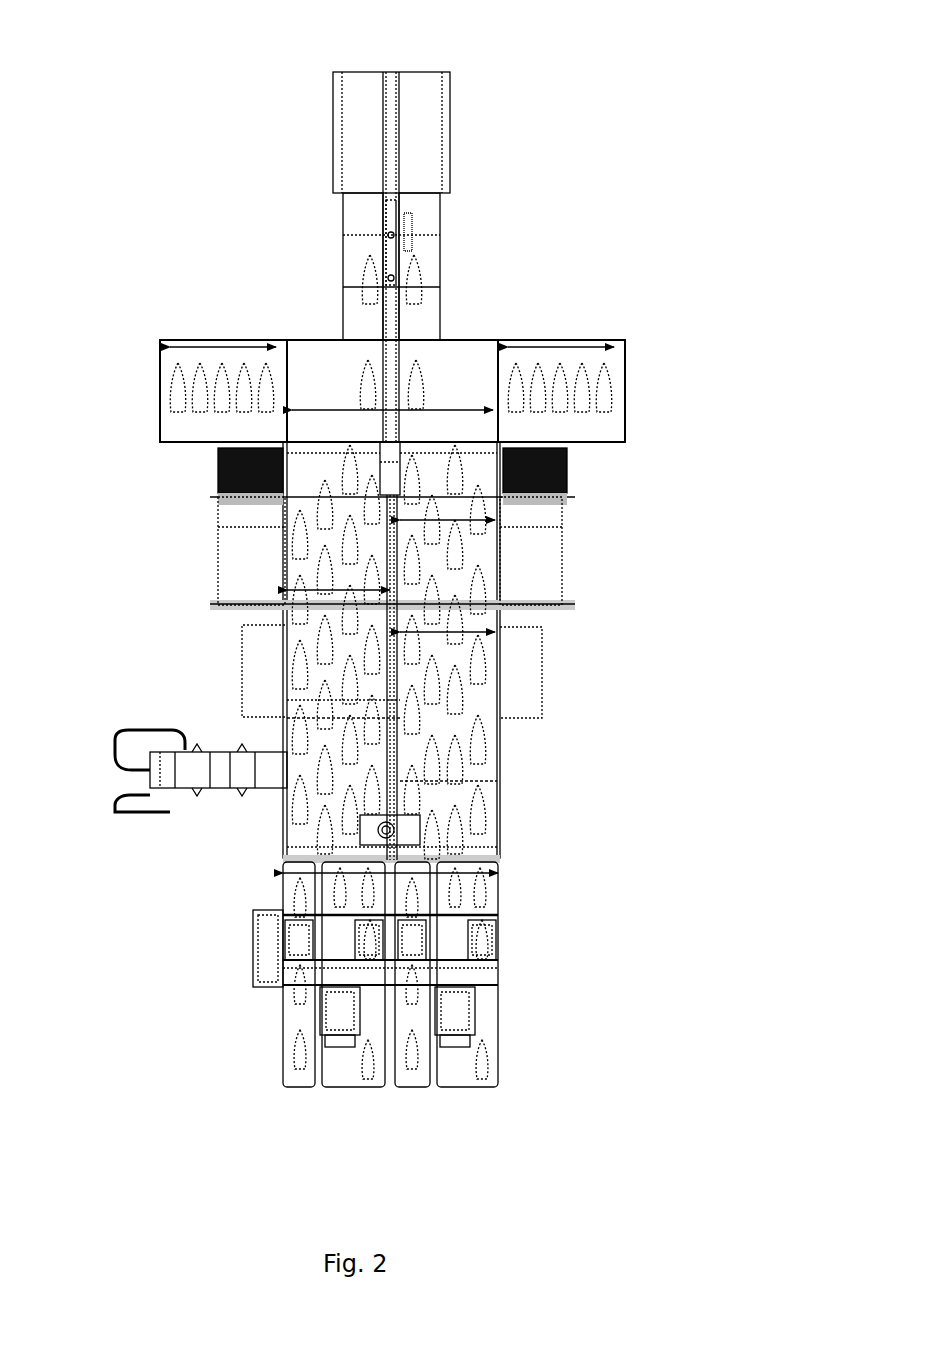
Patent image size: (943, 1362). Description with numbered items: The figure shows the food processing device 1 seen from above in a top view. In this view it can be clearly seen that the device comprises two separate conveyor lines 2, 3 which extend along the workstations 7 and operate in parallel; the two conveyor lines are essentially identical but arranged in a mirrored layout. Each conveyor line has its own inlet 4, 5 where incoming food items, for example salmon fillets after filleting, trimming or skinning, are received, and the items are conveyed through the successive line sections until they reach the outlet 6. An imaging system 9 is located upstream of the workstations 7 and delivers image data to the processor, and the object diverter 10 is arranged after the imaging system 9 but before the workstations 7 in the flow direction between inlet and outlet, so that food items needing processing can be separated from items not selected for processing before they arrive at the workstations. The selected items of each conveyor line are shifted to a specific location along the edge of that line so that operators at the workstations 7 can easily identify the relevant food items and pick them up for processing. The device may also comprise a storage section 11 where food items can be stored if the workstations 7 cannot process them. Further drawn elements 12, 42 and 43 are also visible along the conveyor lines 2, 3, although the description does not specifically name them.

The food processing device 1 is at (158, 80).
The first conveyor line 2 is at (428, 262).
The second conveyor line 3 is at (360, 250).
The inlet 4 is at (362, 70).
The inlet 5 is at (449, 60).
The outlet 6 is at (424, 1117).
The workstations 7 is at (238, 573).
The imaging system 9 is at (450, 135).
The object diverter 10 is at (388, 465).
The storage section 11 is at (165, 398).
The separating element 12 is at (300, 718).
The side feeder 42 is at (140, 778).
The gripper unit 43 is at (500, 968).